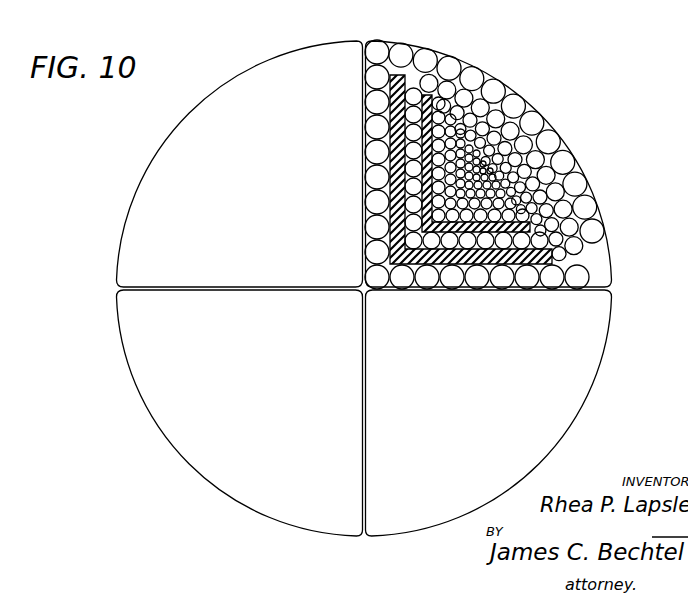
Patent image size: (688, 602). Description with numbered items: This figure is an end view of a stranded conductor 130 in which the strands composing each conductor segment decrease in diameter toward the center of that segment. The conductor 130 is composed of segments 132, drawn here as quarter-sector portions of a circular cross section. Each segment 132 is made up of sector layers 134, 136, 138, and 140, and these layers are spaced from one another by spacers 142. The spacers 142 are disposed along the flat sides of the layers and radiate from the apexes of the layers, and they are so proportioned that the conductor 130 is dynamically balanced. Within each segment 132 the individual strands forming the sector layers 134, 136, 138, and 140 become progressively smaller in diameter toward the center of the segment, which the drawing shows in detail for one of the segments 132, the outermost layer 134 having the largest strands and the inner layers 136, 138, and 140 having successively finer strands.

The conductor 130 is at (364, 38).
The segments 132 is at (240, 73).
The sector layer 134 is at (377, 99).
The sector layer 136 is at (404, 110).
The sector layer 138 is at (428, 128).
The sector layer 140 is at (406, 153).
The spacers 142 is at (430, 202).